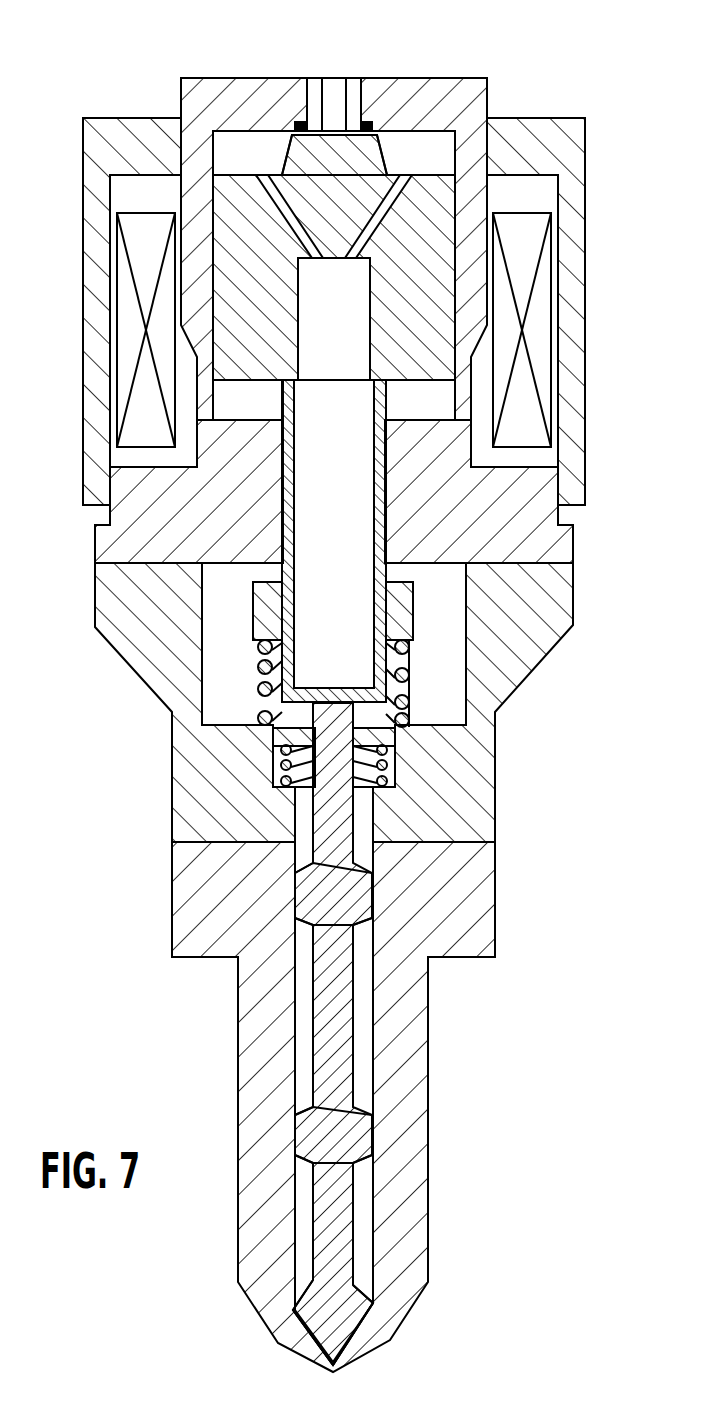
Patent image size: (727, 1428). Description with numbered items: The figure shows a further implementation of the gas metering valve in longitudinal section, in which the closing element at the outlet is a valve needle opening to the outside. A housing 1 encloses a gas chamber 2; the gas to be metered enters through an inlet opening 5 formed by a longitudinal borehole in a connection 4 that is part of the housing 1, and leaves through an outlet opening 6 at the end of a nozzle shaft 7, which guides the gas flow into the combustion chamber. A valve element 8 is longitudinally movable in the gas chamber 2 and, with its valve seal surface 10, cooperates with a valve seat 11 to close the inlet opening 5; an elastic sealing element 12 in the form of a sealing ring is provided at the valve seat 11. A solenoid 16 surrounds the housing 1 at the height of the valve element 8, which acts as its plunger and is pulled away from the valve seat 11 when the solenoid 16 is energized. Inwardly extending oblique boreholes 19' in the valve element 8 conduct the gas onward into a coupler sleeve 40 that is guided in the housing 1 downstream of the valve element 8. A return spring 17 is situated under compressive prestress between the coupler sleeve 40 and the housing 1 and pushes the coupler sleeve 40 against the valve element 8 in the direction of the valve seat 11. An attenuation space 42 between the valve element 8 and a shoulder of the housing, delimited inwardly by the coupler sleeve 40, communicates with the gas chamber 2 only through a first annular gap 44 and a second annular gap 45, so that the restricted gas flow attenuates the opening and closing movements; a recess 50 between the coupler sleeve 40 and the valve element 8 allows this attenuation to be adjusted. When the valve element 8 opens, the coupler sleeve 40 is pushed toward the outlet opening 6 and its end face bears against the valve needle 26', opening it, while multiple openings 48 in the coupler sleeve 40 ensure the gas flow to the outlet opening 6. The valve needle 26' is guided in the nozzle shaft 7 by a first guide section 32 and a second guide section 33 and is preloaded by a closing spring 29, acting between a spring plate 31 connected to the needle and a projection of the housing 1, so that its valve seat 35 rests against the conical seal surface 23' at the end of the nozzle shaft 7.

The housing 1 is at (610, 469).
The gas chamber 2 is at (442, 598).
The connection 4 is at (532, 513).
The inlet opening 5 is at (330, 107).
The outlet opening 6 is at (365, 1303).
The nozzle shaft 7 is at (203, 896).
The valve element 8 is at (427, 280).
The valve seal surface 10 is at (347, 130).
The valve seat 11 is at (296, 138).
The elastic sealing element 12 is at (367, 124).
The solenoid 16 is at (533, 333).
The return spring 17 is at (410, 650).
The oblique boreholes 19' is at (336, 217).
The conical seal surface 23' is at (256, 1344).
The valve needle 26' is at (393, 1034).
The closing spring 29 is at (385, 767).
The spring plate 31 is at (270, 731).
The first guide section 32 is at (360, 892).
The second guide section 33 is at (365, 1135).
The valve seat 35 is at (379, 1317).
The coupler sleeve 40 is at (275, 607).
The attenuation space 42 is at (230, 400).
The first annular gap 44 is at (207, 285).
The second annular gap 45 is at (280, 478).
The openings 48 is at (270, 672).
The recess 50 is at (382, 384).